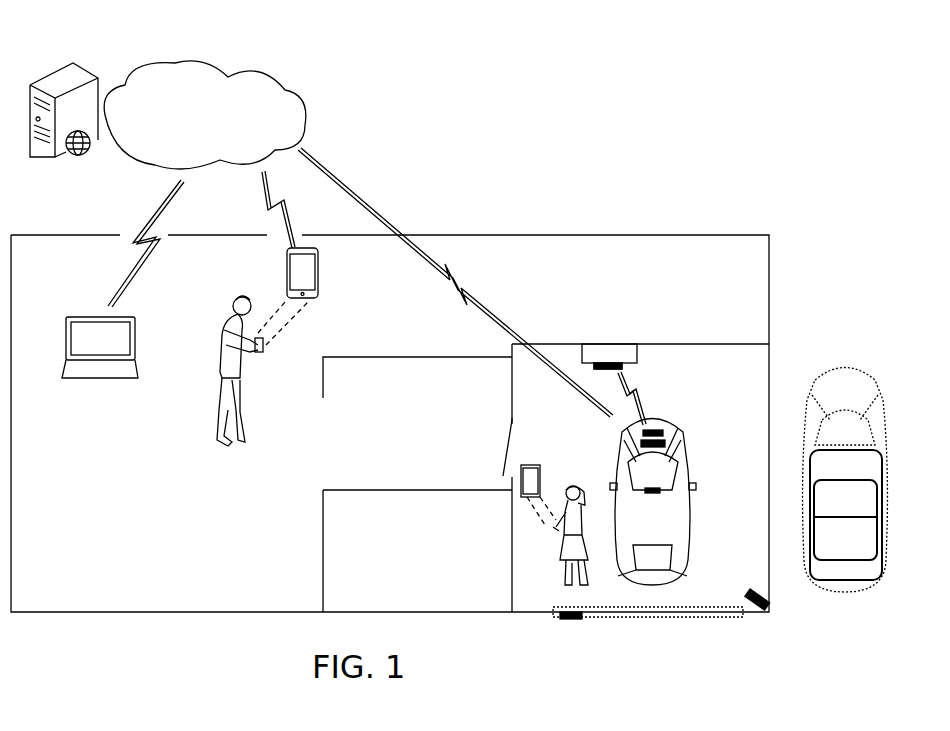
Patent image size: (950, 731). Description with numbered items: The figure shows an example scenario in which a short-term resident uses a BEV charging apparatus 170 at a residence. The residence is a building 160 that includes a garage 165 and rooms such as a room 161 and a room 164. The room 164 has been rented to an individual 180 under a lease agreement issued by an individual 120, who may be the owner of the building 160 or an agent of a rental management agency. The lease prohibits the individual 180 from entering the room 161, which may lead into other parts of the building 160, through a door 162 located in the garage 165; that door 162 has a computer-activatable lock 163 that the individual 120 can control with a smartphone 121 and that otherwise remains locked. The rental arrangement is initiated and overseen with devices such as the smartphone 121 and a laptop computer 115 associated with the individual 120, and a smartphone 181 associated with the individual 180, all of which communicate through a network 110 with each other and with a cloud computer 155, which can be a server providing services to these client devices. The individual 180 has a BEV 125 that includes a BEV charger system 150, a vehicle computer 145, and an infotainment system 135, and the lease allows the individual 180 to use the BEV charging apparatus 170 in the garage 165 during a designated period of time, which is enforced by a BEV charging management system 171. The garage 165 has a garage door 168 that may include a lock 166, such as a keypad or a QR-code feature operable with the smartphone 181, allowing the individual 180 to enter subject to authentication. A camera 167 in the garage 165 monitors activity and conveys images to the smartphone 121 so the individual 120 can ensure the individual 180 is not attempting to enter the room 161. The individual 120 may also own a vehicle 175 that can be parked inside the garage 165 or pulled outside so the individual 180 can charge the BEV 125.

The network 110 is at (205, 115).
The laptop computer 115 is at (66, 342).
The individual 120 is at (207, 323).
The smartphone 121 is at (287, 280).
The BEV 125 is at (702, 497).
The infotainment system 135 is at (652, 492).
The vehicle computer 145 is at (668, 440).
The BEV charger system 150 is at (656, 430).
The cloud computer 155 is at (108, 66).
The building 160 is at (390, 423).
The room 161 is at (417, 478).
The door 162 is at (505, 437).
The computer-activatable lock 163 is at (498, 458).
The room 164 is at (417, 551).
The garage 165 is at (640, 363).
The lock 166 is at (563, 622).
The camera 167 is at (753, 588).
The garage door 168 is at (668, 618).
The BEV charging apparatus 170 is at (609, 356).
The BEV charging management system 171 is at (627, 368).
The vehicle 175 is at (887, 352).
The individual 180 is at (583, 486).
The smartphone 181 is at (555, 472).